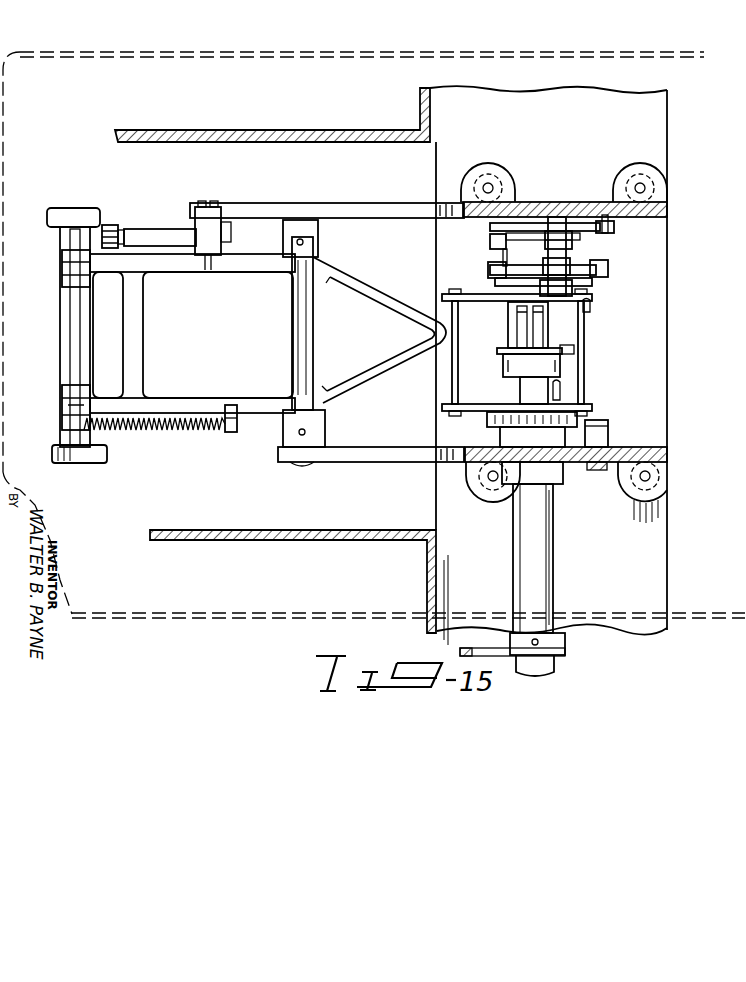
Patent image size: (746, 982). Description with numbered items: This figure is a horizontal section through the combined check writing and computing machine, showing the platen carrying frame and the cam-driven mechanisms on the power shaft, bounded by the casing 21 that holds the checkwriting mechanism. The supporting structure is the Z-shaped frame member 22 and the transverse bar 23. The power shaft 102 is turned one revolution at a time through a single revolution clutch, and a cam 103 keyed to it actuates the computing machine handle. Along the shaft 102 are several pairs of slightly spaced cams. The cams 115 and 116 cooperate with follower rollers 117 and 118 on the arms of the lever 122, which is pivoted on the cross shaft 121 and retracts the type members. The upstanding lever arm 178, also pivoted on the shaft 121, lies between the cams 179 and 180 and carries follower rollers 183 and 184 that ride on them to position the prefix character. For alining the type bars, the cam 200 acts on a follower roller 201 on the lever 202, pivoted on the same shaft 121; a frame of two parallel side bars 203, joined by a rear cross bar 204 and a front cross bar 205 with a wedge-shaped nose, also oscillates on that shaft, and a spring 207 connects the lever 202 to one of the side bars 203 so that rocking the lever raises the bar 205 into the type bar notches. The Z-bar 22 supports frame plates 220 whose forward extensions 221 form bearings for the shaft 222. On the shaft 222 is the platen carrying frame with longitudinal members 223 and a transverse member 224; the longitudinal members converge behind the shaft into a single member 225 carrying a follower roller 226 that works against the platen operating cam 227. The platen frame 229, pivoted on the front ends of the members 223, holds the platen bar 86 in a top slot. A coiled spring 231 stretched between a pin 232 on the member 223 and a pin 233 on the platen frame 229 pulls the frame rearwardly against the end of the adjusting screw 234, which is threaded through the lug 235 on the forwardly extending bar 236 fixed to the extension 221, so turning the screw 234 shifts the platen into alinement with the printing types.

The casing 21 is at (136, 50).
The Z-shaped transversely extending frame member 22 is at (648, 568).
The transverse bar 23 is at (244, 130).
The platen bar 86 is at (75, 303).
The power shaft 102 is at (544, 562).
The cam 103 is at (565, 646).
The cam 115 is at (588, 285).
The cam 116 is at (513, 274).
The follower roller 117 is at (490, 281).
The follower roller 118 is at (610, 268).
The cross shaft 121 is at (584, 305).
The lever 122 is at (541, 286).
The lever arm 178 is at (563, 244).
The cam 179 is at (588, 237).
The cam 180 is at (492, 227).
The follower roller 183 is at (500, 247).
The follower roller 184 is at (605, 222).
The cam 200 is at (604, 422).
The follower roller 201 is at (489, 423).
The lever 202 is at (518, 416).
The side bars 203 is at (507, 300).
The cross bar 204 is at (584, 362).
The cross bar 205 is at (452, 388).
The spring 207 is at (532, 437).
The frame plates 220 is at (577, 202).
The forward extensions 221 is at (353, 213).
The shaft 222 is at (297, 330).
The longitudinal members 223 is at (187, 266).
The transverse member 224 is at (133, 335).
The single member 225 is at (493, 334).
The follower roller 226 is at (553, 336).
The platen operating cam 227 is at (587, 344).
The platen frame 229 is at (67, 347).
The coiled spring 231 is at (163, 432).
The pin 232 is at (228, 433).
The pin 233 is at (67, 430).
The screw 234 is at (126, 230).
The lug 235 is at (114, 225).
The forwardly extending bar 236 is at (166, 230).